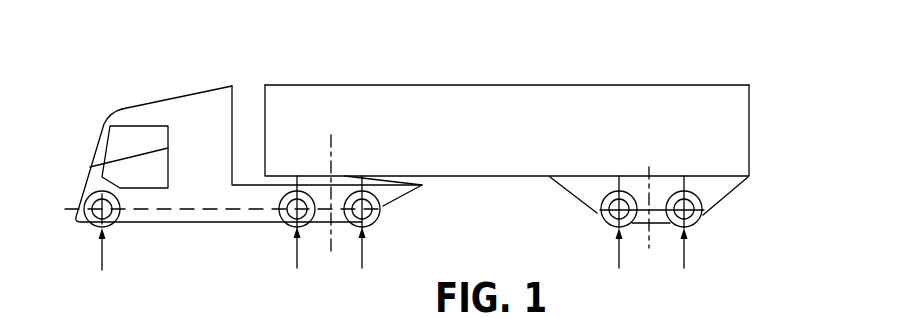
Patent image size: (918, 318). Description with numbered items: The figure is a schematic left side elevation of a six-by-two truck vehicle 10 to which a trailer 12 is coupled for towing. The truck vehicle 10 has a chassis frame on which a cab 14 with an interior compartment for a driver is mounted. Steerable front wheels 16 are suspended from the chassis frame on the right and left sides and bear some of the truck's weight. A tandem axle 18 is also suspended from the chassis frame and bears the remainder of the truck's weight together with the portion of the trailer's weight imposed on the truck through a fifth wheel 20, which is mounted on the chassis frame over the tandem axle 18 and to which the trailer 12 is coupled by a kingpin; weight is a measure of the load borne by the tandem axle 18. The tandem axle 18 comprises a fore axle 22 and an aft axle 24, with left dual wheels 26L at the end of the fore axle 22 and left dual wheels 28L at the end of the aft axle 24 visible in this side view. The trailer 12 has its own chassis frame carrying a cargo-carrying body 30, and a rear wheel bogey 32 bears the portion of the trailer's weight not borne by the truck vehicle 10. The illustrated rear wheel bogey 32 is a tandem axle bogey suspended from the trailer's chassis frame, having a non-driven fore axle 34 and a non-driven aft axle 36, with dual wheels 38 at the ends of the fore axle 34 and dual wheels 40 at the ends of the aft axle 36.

The truck vehicle 10 is at (233, 85).
The trailer 12 is at (751, 84).
The cab 14 is at (185, 93).
The steerable front wheels 16 is at (93, 228).
The tandem axle 18 is at (392, 200).
The fifth wheel 20 is at (332, 172).
The fore axle 22 is at (280, 229).
The aft axle 24 is at (385, 231).
The left dual wheels 26L is at (306, 228).
The left dual wheels 28L is at (349, 227).
The cargo-carrying body 30 is at (570, 85).
The rear wheel bogey 32 is at (746, 198).
The non-driven fore axle 34 is at (598, 232).
The non-driven aft axle 36 is at (711, 226).
The dual wheels 38 is at (633, 229).
The dual wheels 40 is at (673, 228).